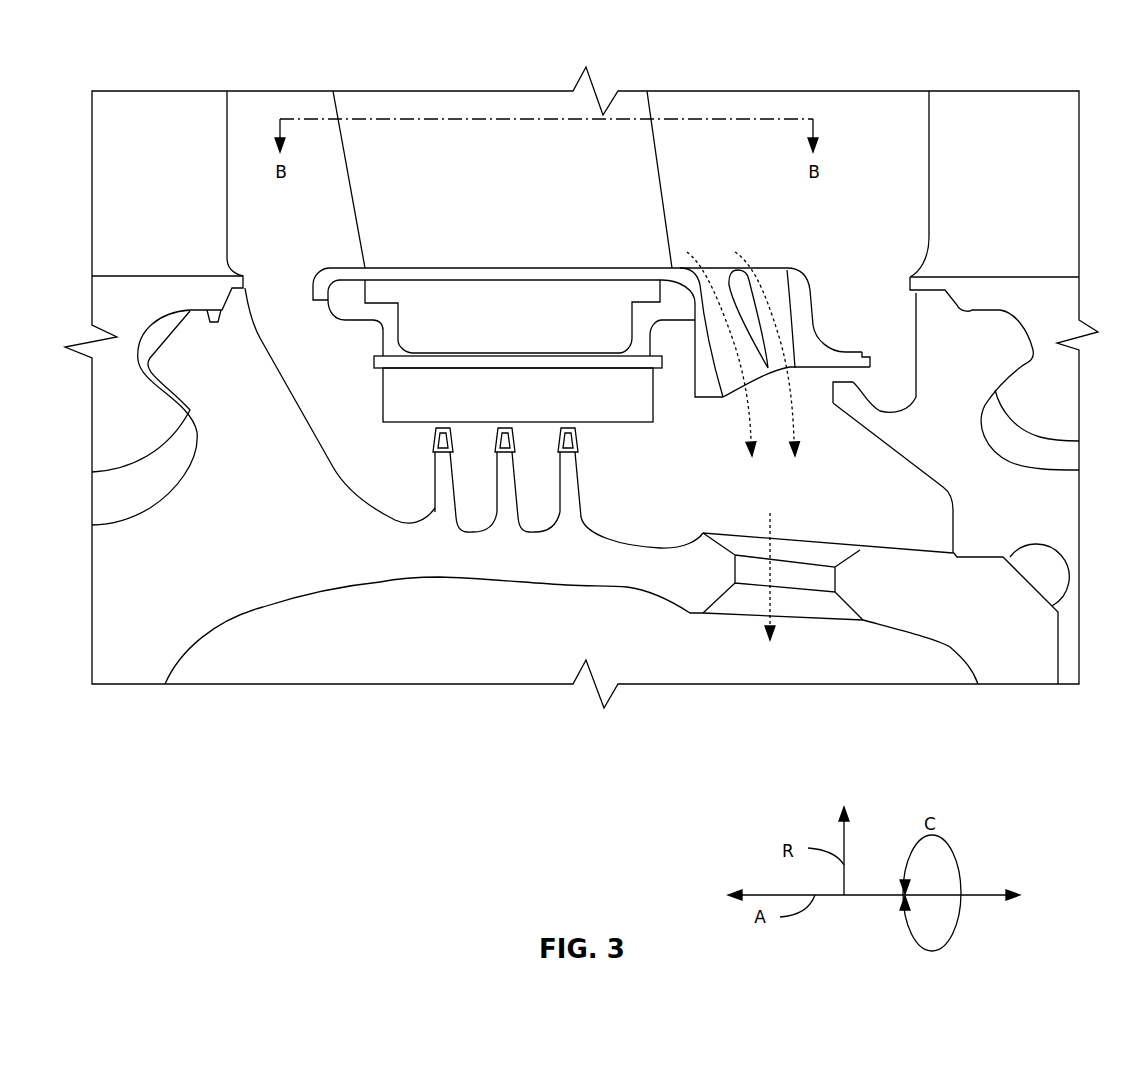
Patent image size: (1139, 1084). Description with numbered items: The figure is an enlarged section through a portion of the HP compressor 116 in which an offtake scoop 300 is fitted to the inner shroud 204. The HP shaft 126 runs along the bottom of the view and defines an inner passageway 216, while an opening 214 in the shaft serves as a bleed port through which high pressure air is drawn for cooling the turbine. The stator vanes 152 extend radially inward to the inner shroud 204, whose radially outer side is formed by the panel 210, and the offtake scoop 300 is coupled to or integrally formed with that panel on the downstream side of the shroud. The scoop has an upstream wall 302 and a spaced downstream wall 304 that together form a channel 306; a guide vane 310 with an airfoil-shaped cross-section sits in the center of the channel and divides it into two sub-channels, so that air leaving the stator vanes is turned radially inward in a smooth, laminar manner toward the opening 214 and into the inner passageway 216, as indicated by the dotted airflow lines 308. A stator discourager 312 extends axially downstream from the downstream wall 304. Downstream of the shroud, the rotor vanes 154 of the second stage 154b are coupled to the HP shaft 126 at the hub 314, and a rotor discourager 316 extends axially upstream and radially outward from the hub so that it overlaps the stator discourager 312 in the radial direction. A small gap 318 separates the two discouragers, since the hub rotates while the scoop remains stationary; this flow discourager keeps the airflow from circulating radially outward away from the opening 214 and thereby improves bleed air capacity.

The HP compressor 116 is at (257, 88).
The HP shaft 126 is at (343, 565).
The stator vanes 152 is at (382, 203).
The rotor vanes 154 is at (948, 170).
The second stage 154b is at (960, 70).
The inner shroud 204 is at (410, 393).
The panel 210 is at (424, 268).
The opening 214 is at (732, 518).
The inner passageway 216 is at (470, 640).
The offtake scoop 300 is at (798, 224).
The upstream wall 302 is at (706, 375).
The downstream wall 304 is at (813, 318).
The channel 306 is at (717, 252).
The airflow lines 308 is at (742, 252).
The guide vane 310 is at (758, 298).
The stator discourager 312 is at (850, 353).
The hub 314 is at (958, 507).
The rotor discourager 316 is at (852, 408).
The gap 318 is at (884, 380).